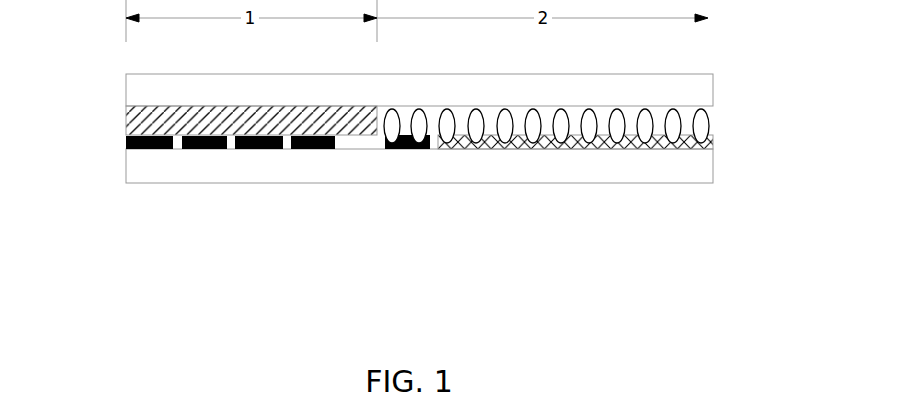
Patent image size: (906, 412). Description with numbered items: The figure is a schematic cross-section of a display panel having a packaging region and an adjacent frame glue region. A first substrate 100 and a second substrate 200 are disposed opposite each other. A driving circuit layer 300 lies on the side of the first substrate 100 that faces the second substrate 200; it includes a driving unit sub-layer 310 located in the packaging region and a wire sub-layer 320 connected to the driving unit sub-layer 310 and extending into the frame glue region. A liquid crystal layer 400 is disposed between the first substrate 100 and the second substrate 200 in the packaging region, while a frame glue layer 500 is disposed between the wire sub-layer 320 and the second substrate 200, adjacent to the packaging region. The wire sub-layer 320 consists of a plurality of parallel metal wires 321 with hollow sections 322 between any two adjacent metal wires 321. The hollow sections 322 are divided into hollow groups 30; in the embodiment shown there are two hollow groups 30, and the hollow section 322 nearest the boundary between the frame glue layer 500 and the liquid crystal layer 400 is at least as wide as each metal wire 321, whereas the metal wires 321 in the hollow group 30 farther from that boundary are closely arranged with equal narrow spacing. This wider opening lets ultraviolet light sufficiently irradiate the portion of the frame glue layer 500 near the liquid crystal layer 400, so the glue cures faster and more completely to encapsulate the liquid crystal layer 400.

The first substrate 100 is at (673, 170).
The second substrate 200 is at (157, 90).
The driving circuit layer 300 is at (549, 211).
The driving unit sub-layer 310 is at (575, 186).
The wire sub-layer 320 is at (412, 150).
The metal wire 321 is at (123, 142).
The hollow section 322 is at (287, 228).
The hollow group 30 is at (257, 208).
The liquid crystal layer 400 is at (709, 125).
The frame glue layer 500 is at (150, 128).